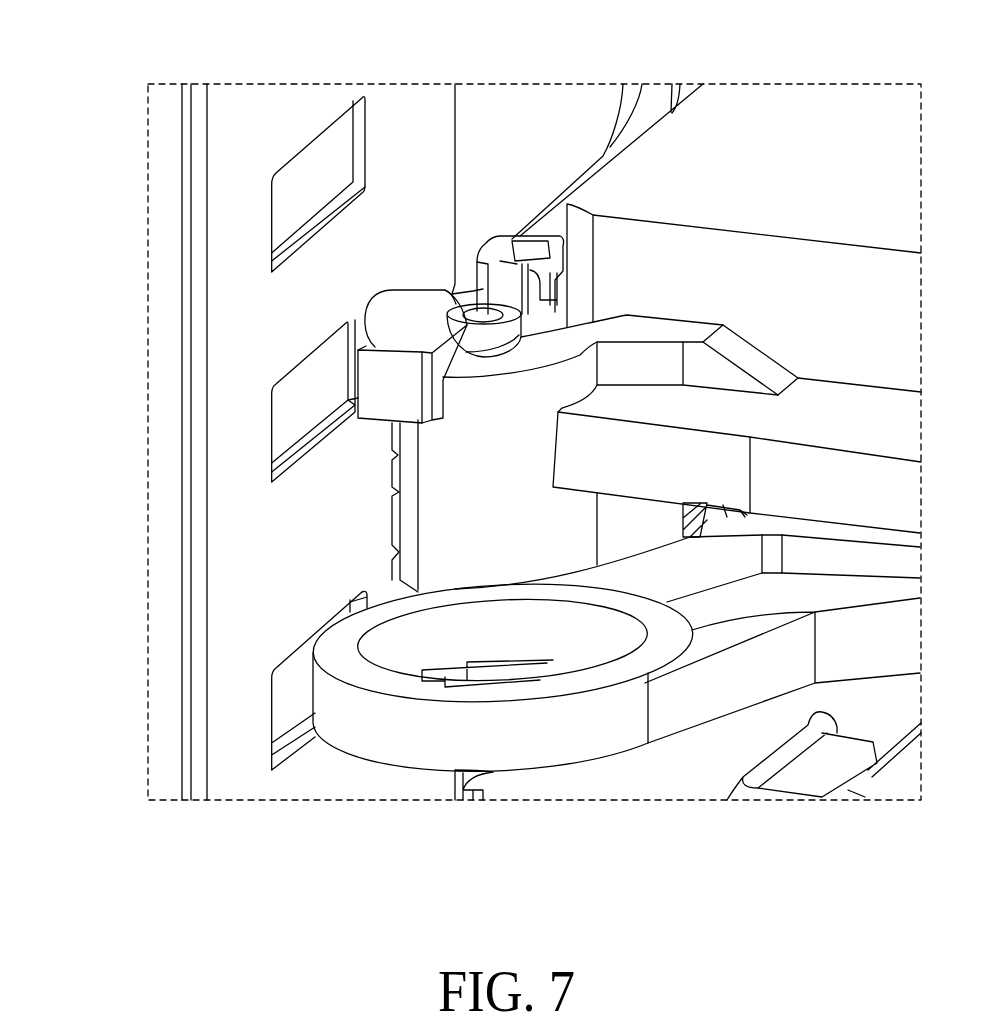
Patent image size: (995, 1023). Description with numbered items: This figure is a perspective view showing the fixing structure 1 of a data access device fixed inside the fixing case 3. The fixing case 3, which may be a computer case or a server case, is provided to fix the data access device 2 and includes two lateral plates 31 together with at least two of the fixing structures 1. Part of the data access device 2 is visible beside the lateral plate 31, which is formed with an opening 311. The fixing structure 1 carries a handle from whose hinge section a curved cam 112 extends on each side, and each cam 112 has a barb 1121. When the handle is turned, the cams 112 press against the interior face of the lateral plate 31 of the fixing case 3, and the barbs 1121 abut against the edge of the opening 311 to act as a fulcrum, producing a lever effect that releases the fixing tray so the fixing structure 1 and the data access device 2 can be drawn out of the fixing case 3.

The fixing structure 1 is at (380, 758).
The data access device 2 is at (812, 130).
The fixing case 3 is at (180, 715).
The lateral plate 31 is at (275, 572).
The opening 311 is at (295, 412).
The cam 112 is at (403, 318).
The barb 1121 is at (355, 377).